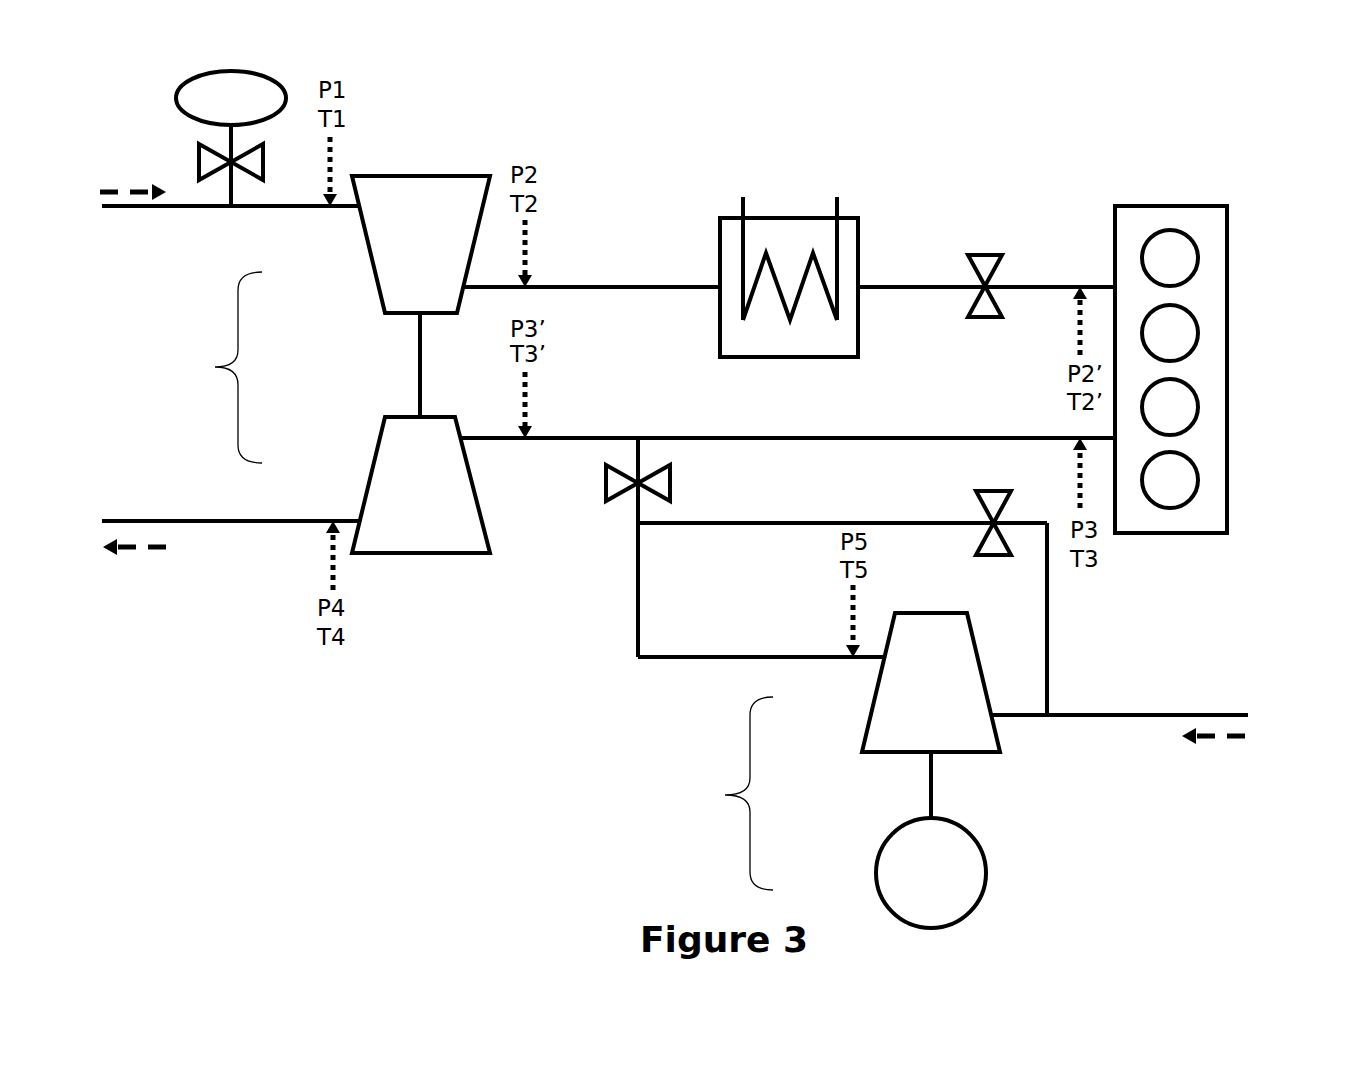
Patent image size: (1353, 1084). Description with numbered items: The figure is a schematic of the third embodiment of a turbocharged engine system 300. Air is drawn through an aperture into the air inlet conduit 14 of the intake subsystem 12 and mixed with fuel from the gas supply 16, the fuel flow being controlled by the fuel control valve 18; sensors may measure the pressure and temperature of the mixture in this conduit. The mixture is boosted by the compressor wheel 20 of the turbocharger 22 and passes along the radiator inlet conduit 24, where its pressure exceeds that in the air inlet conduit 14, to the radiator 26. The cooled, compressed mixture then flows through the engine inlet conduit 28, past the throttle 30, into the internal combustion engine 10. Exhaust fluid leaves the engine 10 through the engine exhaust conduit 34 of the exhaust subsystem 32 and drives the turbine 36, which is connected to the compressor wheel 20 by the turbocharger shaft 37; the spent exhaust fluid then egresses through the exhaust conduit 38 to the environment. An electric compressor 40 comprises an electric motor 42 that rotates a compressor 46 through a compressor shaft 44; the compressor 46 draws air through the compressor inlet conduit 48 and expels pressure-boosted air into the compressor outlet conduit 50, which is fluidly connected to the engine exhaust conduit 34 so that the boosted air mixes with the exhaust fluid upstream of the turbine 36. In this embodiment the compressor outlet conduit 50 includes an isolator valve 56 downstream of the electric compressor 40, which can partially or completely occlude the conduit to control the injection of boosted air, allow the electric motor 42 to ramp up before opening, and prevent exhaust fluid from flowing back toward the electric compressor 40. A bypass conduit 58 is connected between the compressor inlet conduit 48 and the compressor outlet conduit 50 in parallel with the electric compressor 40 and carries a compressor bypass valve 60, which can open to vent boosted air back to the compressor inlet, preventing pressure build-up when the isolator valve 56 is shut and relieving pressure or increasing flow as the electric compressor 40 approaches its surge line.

The internal combustion engine 10 is at (1227, 277).
The intake subsystem 12 is at (577, 185).
The air inlet conduit 14 is at (135, 208).
The gas supply 16 is at (176, 97).
The fuel control valve 18 is at (199, 162).
The compressor wheel 20 is at (368, 248).
The turbocharger 22 is at (218, 367).
The radiator inlet conduit 24 is at (640, 287).
The radiator 26 is at (783, 217).
The engine inlet conduit 28 is at (903, 287).
The throttle 30 is at (985, 255).
The exhaust subsystem 32 is at (530, 580).
The engine exhaust conduit 34 is at (708, 438).
The turbine 36 is at (370, 473).
The turbocharger shaft 37 is at (420, 345).
The exhaust conduit 38 is at (140, 521).
The electric compressor 40 is at (730, 793).
The electric motor 42 is at (878, 898).
The compressor shaft 44 is at (930, 770).
The compressor 46 is at (878, 675).
The compressor inlet conduit 48 is at (1112, 715).
The compressor outlet conduit 50 is at (685, 657).
The isolator valve 56 is at (670, 492).
The bypass conduit 58 is at (1047, 643).
The compressor bypass valve 60 is at (980, 510).
The turbocharged engine system 300 is at (300, 750).